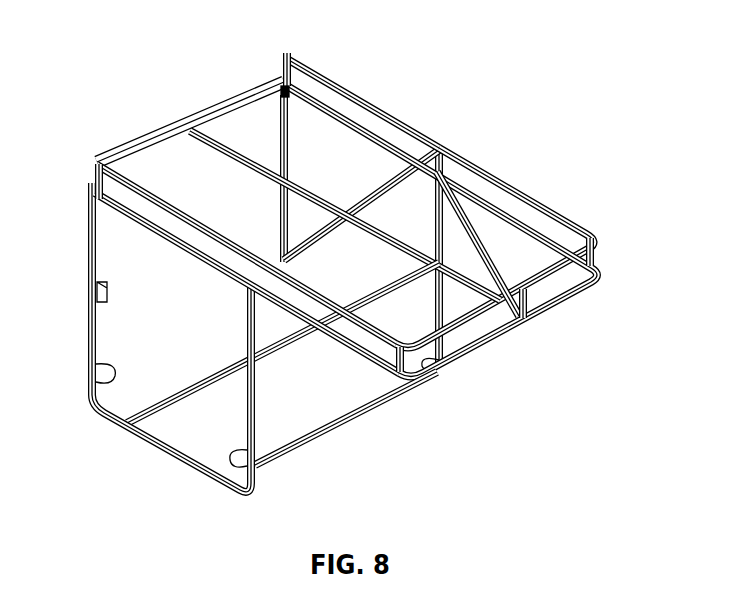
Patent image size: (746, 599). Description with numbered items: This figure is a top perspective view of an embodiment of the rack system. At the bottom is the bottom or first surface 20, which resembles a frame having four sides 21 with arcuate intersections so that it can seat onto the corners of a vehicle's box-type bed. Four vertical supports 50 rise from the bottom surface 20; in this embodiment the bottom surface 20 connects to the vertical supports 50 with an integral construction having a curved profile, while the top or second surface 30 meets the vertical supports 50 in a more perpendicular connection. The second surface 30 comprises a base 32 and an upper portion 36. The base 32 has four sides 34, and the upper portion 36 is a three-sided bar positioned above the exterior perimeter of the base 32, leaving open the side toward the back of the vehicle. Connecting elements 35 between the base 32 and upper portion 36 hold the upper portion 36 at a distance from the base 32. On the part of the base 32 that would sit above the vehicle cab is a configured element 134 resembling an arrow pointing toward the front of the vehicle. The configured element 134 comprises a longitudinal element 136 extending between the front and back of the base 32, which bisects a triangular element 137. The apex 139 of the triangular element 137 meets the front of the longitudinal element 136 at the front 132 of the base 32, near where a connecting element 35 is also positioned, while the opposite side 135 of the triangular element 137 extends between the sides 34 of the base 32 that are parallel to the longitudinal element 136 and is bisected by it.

The bottom or first surface 20 is at (266, 363).
The sides 21 is at (313, 437).
The top or second surface 30 is at (329, 277).
The base 32 is at (333, 277).
The sides 34 is at (173, 131).
The connecting elements 35 is at (282, 66).
The upper portion 36 is at (173, 206).
The vertical supports 50 is at (279, 224).
The front of the base 132 is at (506, 215).
The configured element 134 is at (374, 12).
The side of the triangular element 135 is at (374, 202).
The longitudinal element 136 is at (292, 188).
The triangular element 137 is at (493, 232).
The apex of the triangular element 139 is at (503, 348).